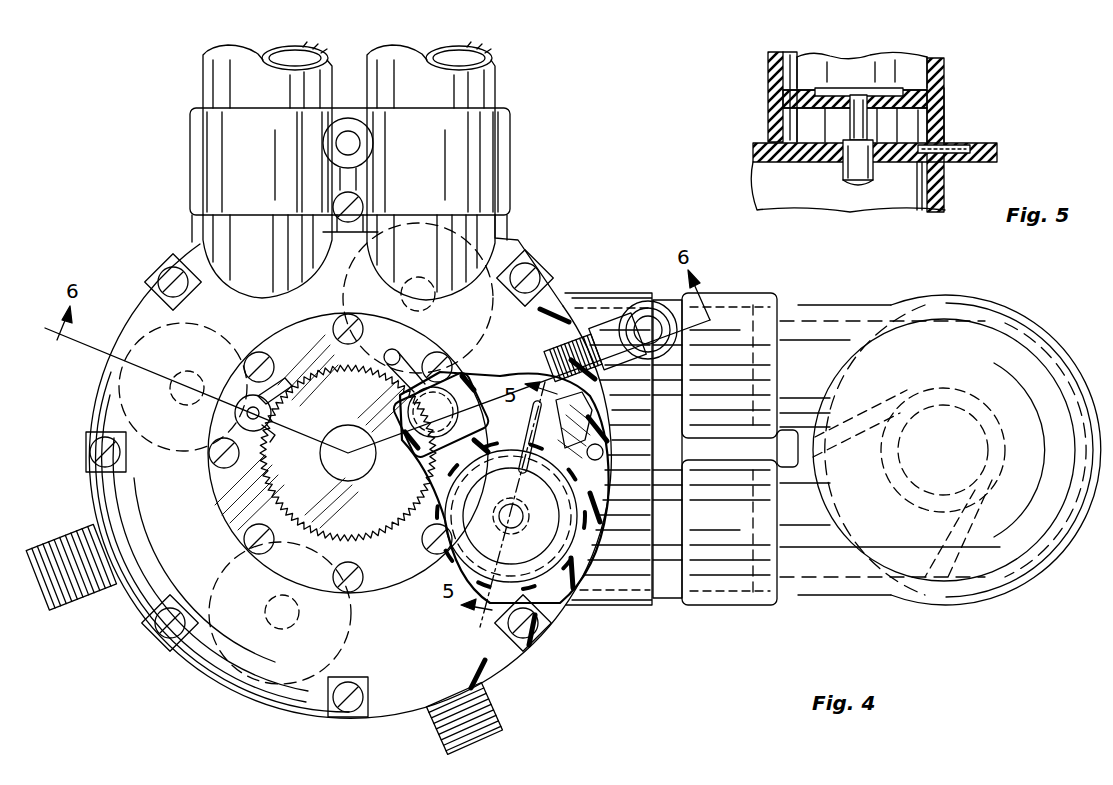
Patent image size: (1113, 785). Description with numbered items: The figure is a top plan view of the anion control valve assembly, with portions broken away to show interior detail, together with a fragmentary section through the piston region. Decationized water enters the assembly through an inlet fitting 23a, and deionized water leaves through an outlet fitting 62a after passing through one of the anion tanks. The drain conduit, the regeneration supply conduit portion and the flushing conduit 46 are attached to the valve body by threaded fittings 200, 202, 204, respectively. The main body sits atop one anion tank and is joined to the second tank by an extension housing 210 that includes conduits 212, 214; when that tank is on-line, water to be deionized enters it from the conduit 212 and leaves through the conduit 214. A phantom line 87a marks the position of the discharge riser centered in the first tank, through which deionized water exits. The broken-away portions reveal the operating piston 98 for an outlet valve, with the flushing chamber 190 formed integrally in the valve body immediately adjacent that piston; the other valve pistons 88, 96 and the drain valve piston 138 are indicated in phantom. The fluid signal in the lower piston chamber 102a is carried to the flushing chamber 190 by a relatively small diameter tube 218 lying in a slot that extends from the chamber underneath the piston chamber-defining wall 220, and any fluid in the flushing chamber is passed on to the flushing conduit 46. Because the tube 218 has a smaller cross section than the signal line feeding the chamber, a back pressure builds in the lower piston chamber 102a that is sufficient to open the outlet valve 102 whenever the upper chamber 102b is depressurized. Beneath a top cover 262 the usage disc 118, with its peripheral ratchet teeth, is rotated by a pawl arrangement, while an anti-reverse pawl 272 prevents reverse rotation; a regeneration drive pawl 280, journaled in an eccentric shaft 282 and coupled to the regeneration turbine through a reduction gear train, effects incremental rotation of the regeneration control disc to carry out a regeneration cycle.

In FIG. 4, the inlet fitting 23a is at (267, 170).
In FIG. 4, the outlet fitting 62a is at (431, 171).
In FIG. 4, the piston 96 is at (405, 244).
In FIG. 4, the piston 88 is at (126, 415).
In FIG. 4, the top cover 262 is at (285, 308).
In FIG. 4, the usage disc 118 is at (332, 416).
In FIG. 4, the regeneration drive pawl 280 is at (243, 405).
In FIG. 4, the eccentric shaft 282 is at (270, 441).
In FIG. 4, the anti-reverse pawl 272 is at (400, 352).
In FIG. 4, the piston 138 is at (433, 412).
In FIG. 4, the flushing chamber 190 is at (520, 372).
In FIG. 5, the flushing chamber 190 is at (994, 122).
In FIG. 4, the tube 218 is at (525, 416).
In FIG. 5, the tube 218 is at (962, 142).
In FIG. 4, the piston chamber-defining wall 220 is at (562, 444).
In FIG. 5, the piston chamber-defining wall 220 is at (947, 100).
In FIG. 4, the operating piston 98 is at (538, 558).
In FIG. 5, the operating piston 98 is at (828, 100).
In FIG. 4, the threaded fitting 204 is at (607, 328).
In FIG. 4, the flushing conduit 46 is at (658, 302).
In FIG. 4, the extension housing 210 is at (706, 622).
In FIG. 4, the conduit 212 is at (672, 374).
In FIG. 4, the conduit 214 is at (672, 526).
In FIG. 4, the phantom line 87a is at (900, 468).
In FIG. 4, the threaded fitting 200 is at (74, 608).
In FIG. 4, the threaded fitting 202 is at (493, 701).
In FIG. 5, the outlet valve 102 is at (905, 76).
In FIG. 5, the lower piston chamber 102a is at (797, 126).
In FIG. 5, the upper chamber 102b is at (776, 72).